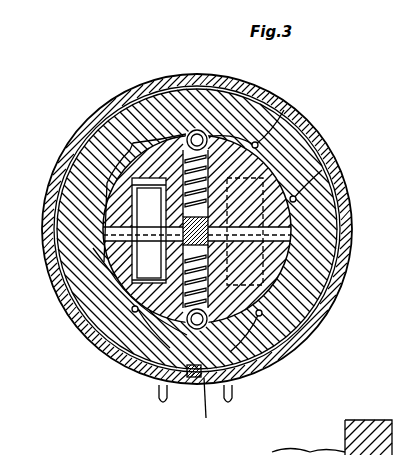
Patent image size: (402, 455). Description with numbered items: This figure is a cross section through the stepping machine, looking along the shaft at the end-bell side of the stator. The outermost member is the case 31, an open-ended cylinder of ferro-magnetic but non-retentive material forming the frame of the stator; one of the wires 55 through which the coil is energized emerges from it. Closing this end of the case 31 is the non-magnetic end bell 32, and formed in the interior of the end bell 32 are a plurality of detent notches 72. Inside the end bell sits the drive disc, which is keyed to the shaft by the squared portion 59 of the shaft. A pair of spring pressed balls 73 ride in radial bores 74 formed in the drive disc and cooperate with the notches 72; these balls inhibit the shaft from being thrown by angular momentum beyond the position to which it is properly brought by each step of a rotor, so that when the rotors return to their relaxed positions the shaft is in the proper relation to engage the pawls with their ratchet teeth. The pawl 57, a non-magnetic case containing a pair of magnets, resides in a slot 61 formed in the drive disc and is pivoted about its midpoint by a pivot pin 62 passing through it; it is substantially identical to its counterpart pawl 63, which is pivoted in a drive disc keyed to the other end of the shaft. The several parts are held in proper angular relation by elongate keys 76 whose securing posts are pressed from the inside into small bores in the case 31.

The case 31 is at (334, 285).
The end bell 32 is at (173, 93).
The wire 55 is at (170, 395).
The pawl 57 is at (140, 197).
The squared portion 59 is at (291, 236).
The slot 61 is at (132, 258).
The pivot pin 62 is at (105, 231).
The pawl 63 is at (297, 213).
The detent notches 72 is at (259, 143).
The spring pressed balls 73 is at (231, 120).
The radial bores 74 is at (187, 291).
The elongate keys 76 is at (217, 409).